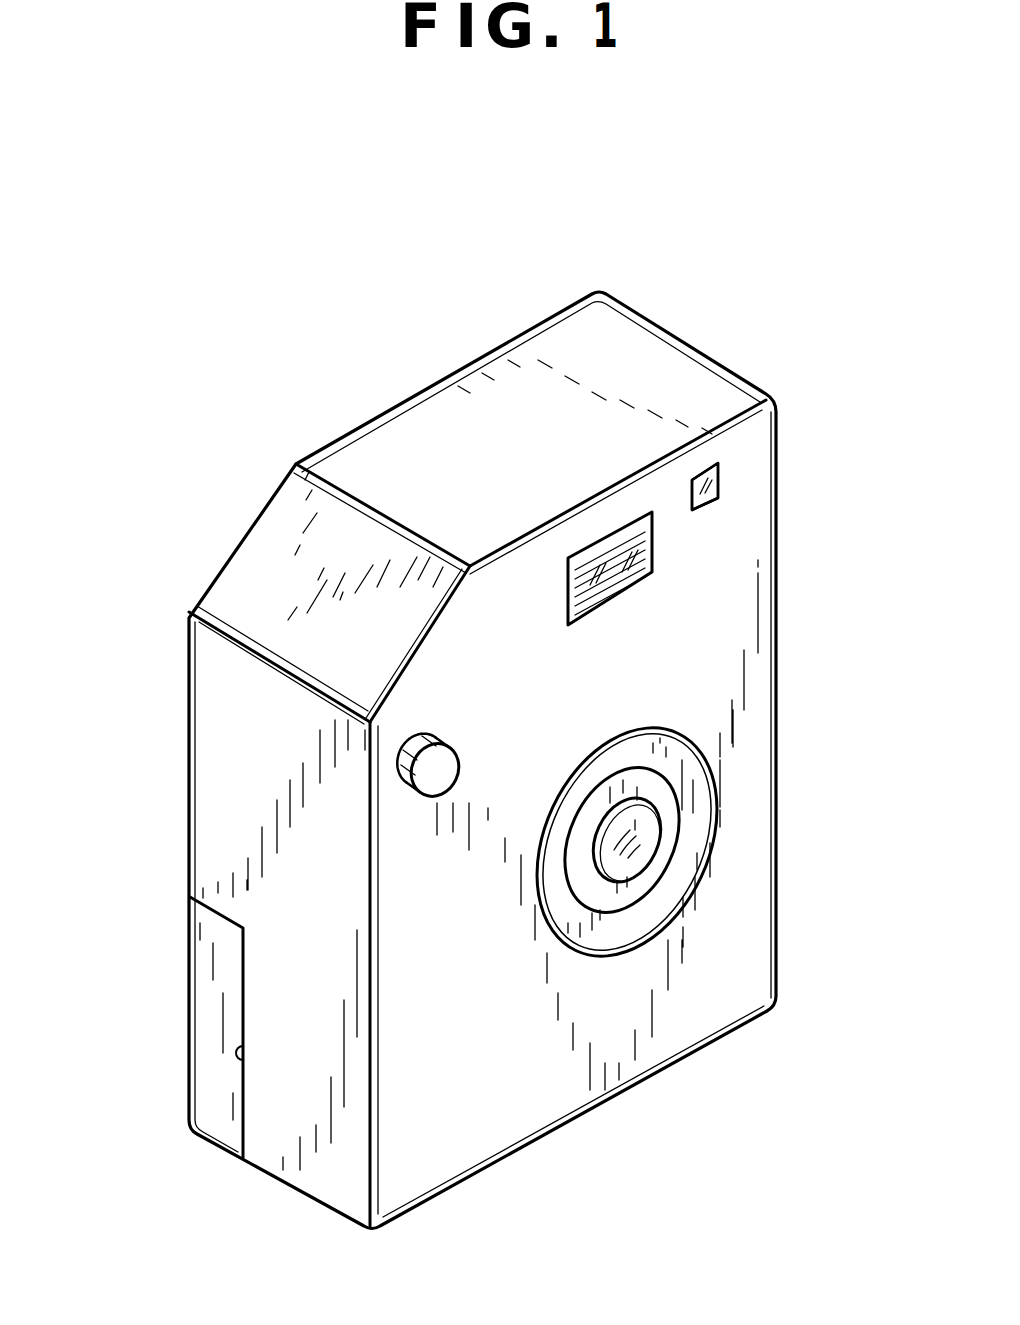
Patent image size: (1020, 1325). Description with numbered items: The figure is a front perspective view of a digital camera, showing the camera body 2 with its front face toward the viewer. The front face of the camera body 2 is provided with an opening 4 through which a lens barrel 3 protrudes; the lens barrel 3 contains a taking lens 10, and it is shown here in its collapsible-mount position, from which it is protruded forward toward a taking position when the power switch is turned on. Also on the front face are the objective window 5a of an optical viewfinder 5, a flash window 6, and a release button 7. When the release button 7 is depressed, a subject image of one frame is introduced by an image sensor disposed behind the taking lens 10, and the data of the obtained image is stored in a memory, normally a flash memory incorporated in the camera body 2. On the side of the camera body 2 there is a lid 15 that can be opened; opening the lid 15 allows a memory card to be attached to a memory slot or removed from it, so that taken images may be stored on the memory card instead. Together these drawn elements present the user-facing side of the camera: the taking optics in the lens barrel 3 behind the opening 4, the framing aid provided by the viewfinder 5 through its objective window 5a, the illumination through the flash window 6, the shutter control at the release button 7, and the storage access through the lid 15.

The camera body 2 is at (657, 270).
The lens barrel 3 is at (667, 885).
The opening 4 is at (543, 940).
The optical viewfinder 5 is at (743, 528).
The objective window 5a is at (717, 473).
The flash window 6 is at (615, 535).
The release button 7 is at (458, 747).
The taking lens 10 is at (647, 818).
The lid 15 is at (205, 993).